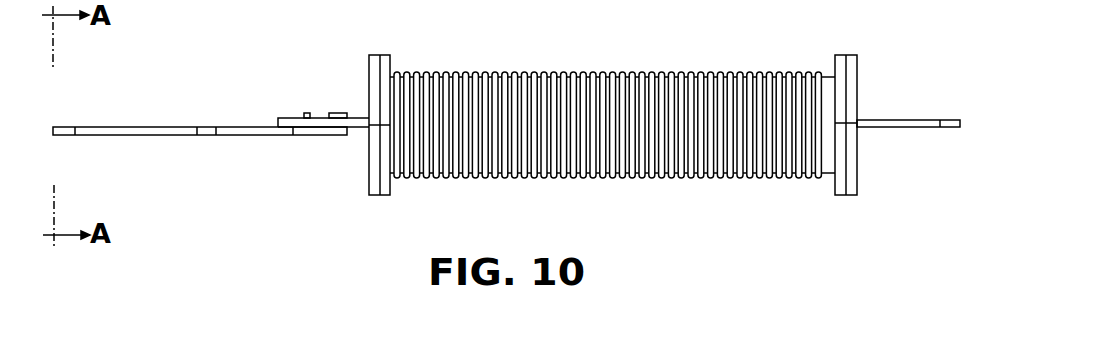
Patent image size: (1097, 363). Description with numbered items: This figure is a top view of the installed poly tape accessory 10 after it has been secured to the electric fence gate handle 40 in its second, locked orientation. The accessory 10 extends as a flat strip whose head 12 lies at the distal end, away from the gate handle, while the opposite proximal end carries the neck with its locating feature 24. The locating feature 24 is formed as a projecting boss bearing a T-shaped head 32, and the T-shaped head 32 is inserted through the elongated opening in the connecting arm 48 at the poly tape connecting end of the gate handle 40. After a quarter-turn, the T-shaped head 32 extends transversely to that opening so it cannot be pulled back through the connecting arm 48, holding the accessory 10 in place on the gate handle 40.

The poly tape accessory 10 is at (202, 79).
The head 12 is at (131, 127).
The locating feature 24 is at (333, 112).
The T-shaped head 32 is at (307, 112).
The electric fence gate handle 40 is at (626, 57).
The connecting arm 48 is at (358, 130).